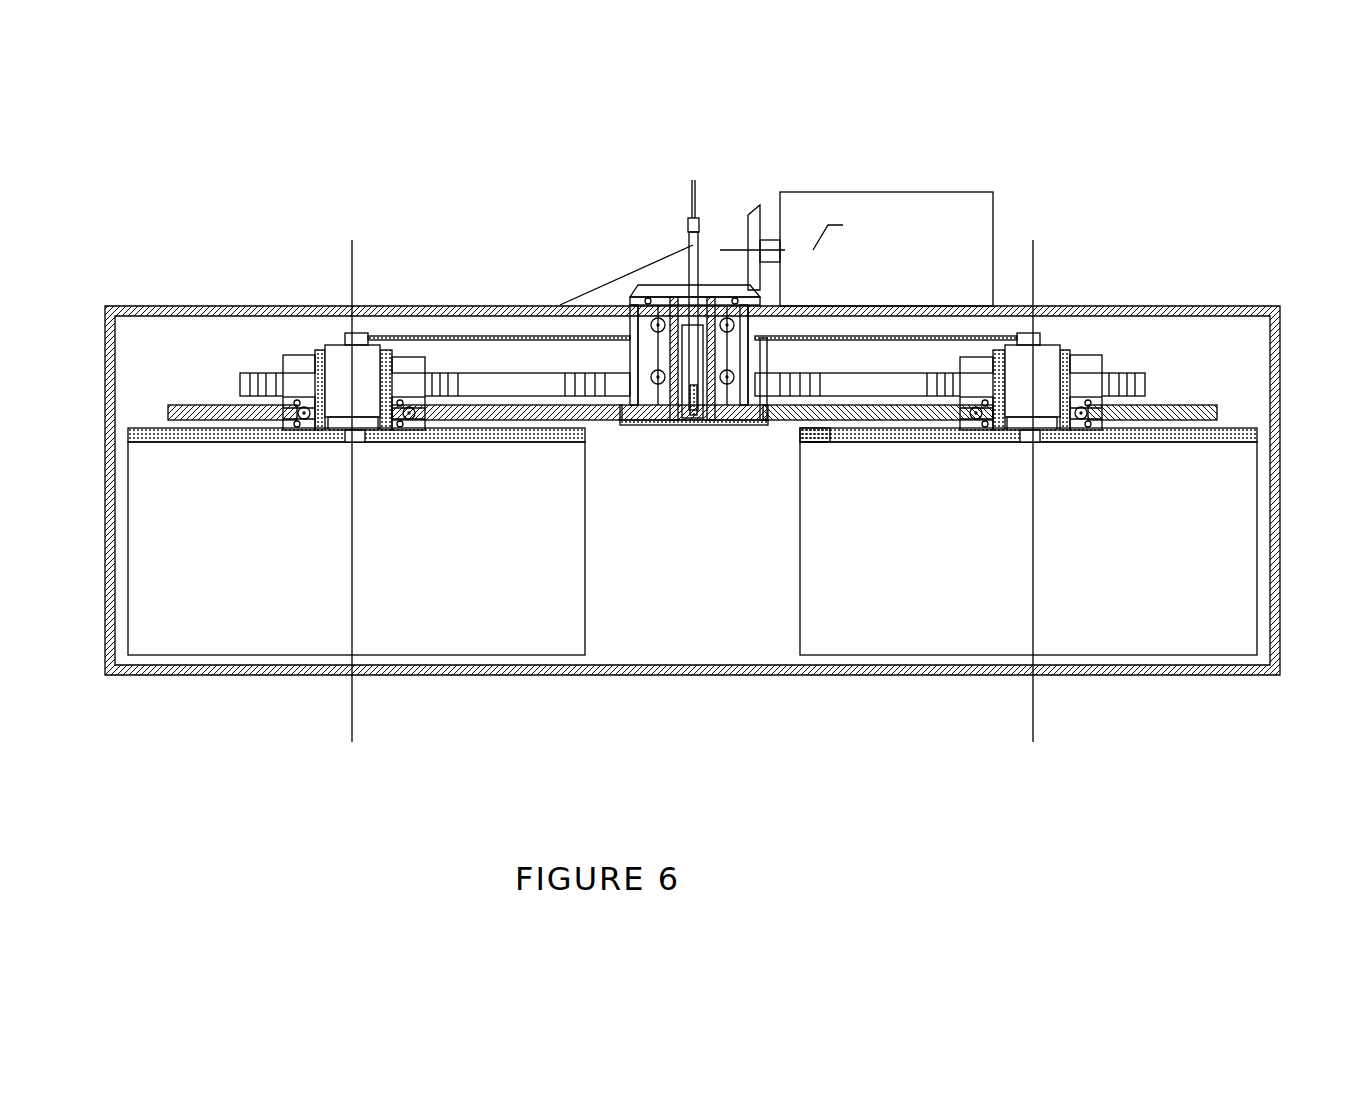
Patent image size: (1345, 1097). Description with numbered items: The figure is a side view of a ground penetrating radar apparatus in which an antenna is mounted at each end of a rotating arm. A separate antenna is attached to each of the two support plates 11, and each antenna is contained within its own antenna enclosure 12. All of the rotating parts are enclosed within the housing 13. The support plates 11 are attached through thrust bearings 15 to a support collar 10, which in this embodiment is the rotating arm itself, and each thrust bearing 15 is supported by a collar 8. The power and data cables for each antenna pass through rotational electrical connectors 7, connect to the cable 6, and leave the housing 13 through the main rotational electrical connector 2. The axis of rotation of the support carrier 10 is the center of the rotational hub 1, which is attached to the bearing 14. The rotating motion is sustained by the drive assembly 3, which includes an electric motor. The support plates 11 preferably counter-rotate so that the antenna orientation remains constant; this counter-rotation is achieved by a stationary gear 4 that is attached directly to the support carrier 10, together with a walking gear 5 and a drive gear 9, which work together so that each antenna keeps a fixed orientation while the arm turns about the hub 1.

The rotational hub 1 is at (680, 298).
The main rotational electrical connector 2 is at (690, 218).
The drive assembly 3 is at (780, 192).
The stationary gear 4 is at (630, 330).
The walking gear 5 is at (515, 372).
The cable 6 is at (300, 355).
The rotational electrical connector 7 is at (363, 334).
The collar 8 is at (438, 336).
The drive gear 9 is at (257, 373).
The support collar 10 is at (223, 407).
The support plate 11 is at (155, 430).
The antenna enclosure 12 is at (468, 620).
The housing 13 is at (550, 672).
The bearing 14 is at (660, 420).
The thrust bearing 15 is at (820, 420).